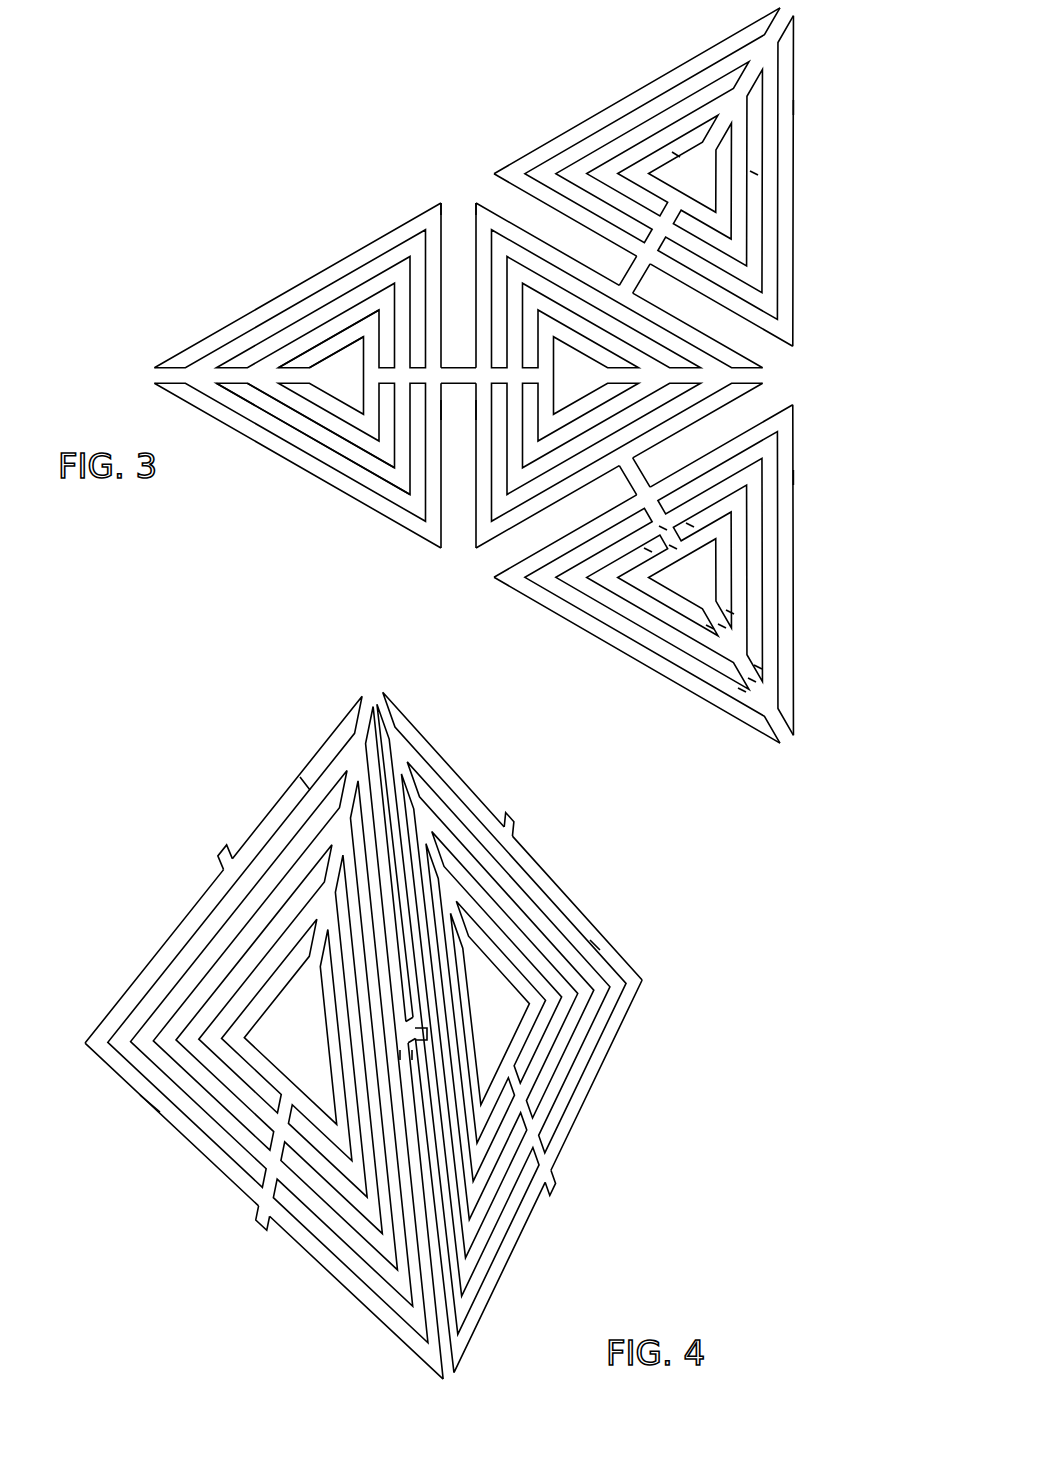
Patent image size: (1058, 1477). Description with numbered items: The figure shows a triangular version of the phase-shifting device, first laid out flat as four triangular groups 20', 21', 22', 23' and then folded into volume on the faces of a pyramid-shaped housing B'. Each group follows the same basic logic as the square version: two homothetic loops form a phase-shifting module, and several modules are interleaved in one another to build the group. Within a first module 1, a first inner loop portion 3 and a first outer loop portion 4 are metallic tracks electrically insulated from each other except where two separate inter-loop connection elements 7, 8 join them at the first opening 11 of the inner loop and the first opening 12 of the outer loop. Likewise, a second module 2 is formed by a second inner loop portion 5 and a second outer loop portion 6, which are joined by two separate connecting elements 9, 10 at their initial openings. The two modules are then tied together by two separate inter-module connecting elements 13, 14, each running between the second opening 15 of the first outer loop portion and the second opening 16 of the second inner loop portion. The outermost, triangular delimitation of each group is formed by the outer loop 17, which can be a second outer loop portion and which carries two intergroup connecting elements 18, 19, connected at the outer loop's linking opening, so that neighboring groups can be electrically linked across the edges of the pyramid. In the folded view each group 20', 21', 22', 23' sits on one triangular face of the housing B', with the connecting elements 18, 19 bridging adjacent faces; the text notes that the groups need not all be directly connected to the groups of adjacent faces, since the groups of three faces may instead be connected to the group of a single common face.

In FIG. 3, the first module 1 is at (676, 155).
In FIG. 3, the second module 2 is at (756, 173).
In FIG. 3, the first inner loop portion 3 is at (354, 342).
In FIG. 3, the first outer loop portion 4 is at (322, 342).
In FIG. 3, the second inner loop portion 5 is at (332, 430).
In FIG. 3, the second outer loop portion 6 is at (292, 430).
In FIG. 3, the inter-loop connection element 7 is at (730, 612).
In FIG. 3, the inter-loop connection element 8 is at (710, 627).
In FIG. 3, the connecting element 9 is at (758, 667).
In FIG. 3, the connecting element 10 is at (742, 690).
In FIG. 3, the first opening 11 is at (724, 626).
In FIG. 3, the first opening 12 is at (754, 680).
In FIG. 3, the inter-module connecting element 13 is at (690, 527).
In FIG. 3, the inter-module connecting element 14 is at (648, 551).
In FIG. 3, the second opening 15 is at (675, 547).
In FIG. 3, the second opening 16 is at (661, 529).
In FIG. 3, the outer loop 17 is at (469, 236).
In FIG. 4, the outer loop 17 is at (308, 782).
In FIG. 3, the intergroup connecting element 18 is at (458, 390).
In FIG. 4, the intergroup connecting element 18 is at (222, 887).
In FIG. 3, the intergroup connecting element 19 is at (458, 362).
In FIG. 4, the intergroup connecting element 19 is at (200, 912).
In FIG. 3, the group 20' is at (295, 375).
In FIG. 3, the group 21' is at (715, 173).
In FIG. 4, the group 21' is at (479, 944).
In FIG. 3, the group 22' is at (715, 615).
In FIG. 4, the group 22' is at (314, 963).
In FIG. 3, the group 23' is at (594, 423).
In FIG. 4, the housing B' is at (118, 1142).